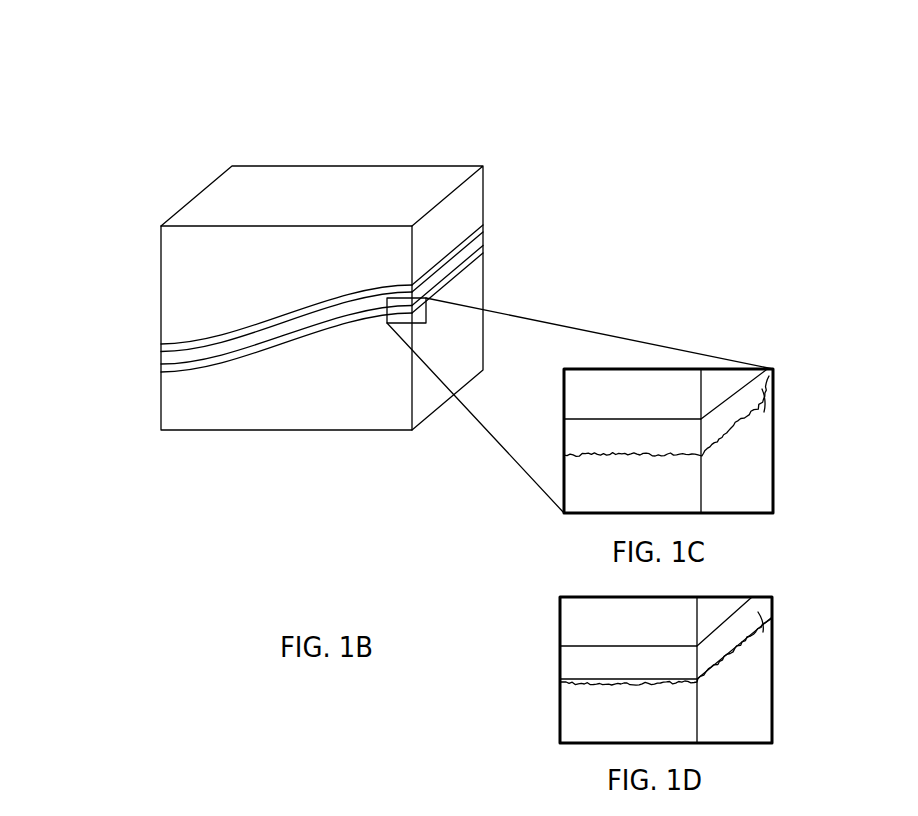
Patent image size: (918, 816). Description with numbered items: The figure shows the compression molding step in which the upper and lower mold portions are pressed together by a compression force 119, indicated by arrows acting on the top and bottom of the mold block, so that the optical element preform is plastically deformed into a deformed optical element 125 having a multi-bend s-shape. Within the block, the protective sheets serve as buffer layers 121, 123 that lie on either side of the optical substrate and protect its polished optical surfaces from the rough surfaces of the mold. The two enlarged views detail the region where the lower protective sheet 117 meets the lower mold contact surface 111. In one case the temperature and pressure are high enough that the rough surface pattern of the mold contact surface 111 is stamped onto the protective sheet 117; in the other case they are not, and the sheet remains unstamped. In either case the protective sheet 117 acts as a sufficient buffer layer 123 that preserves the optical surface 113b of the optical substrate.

In FIG. 1C, the lower mold contact surface 111 is at (596, 458).
In FIG. 1D, the lower mold contact surface 111 is at (605, 681).
In FIG. 1C, the optical surface 113b is at (737, 389).
In FIG. 1D, the optical surface 113b is at (741, 611).
In FIG. 1C, the lower protective sheet 117 is at (762, 388).
In FIG. 1D, the lower protective sheet 117 is at (758, 612).
In FIG. 1B, the compression force 119 is at (320, 198).
In FIG. 1B, the buffer layer 121 is at (162, 347).
In FIG. 1B, the buffer layer 123 is at (162, 367).
In FIG. 1B, the deformed optical element 125 is at (493, 225).